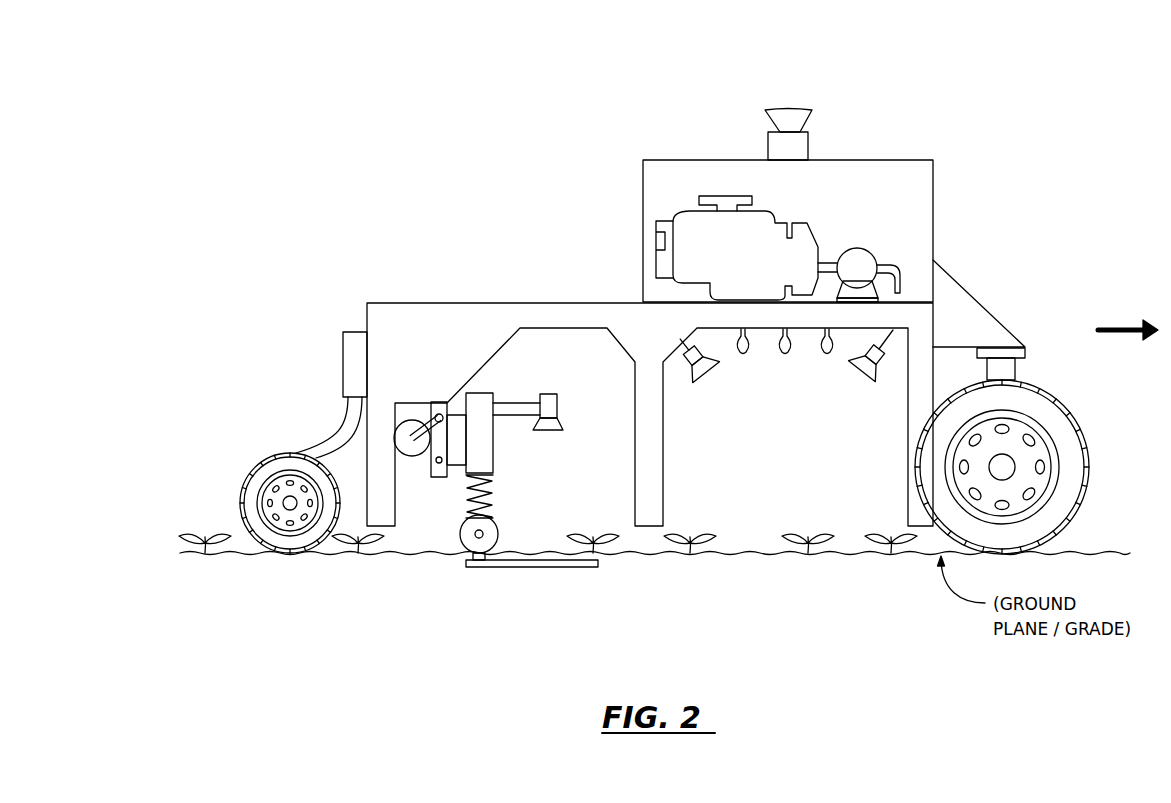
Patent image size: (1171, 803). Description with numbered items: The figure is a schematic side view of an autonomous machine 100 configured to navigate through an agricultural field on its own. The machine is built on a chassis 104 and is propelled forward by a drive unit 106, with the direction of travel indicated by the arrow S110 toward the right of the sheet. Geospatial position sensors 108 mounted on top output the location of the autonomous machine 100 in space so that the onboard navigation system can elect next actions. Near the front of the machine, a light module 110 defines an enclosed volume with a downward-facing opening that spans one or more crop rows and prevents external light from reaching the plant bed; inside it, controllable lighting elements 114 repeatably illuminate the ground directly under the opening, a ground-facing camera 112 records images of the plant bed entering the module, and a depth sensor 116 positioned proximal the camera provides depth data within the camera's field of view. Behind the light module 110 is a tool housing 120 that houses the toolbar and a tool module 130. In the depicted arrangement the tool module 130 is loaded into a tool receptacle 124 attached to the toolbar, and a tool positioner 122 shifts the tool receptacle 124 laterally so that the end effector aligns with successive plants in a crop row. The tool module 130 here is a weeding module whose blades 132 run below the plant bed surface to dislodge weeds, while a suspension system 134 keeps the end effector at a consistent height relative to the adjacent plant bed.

The autonomous machine 100 is at (1060, 155).
The chassis 104 is at (397, 322).
The drive unit 106 is at (690, 238).
The geospatial position sensors 108 is at (792, 109).
The direction of travel S110 is at (1128, 314).
The light module 110 is at (734, 505).
The ground-facing camera 112 is at (871, 386).
The lighting elements 114 is at (785, 358).
The depth sensor 116 is at (702, 383).
The tool housing 120 is at (416, 536).
The tool positioner 122 is at (413, 420).
The tool receptacle 124 is at (436, 468).
The tool module 130 is at (478, 393).
The blades 132 is at (483, 571).
The suspension system 134 is at (493, 503).